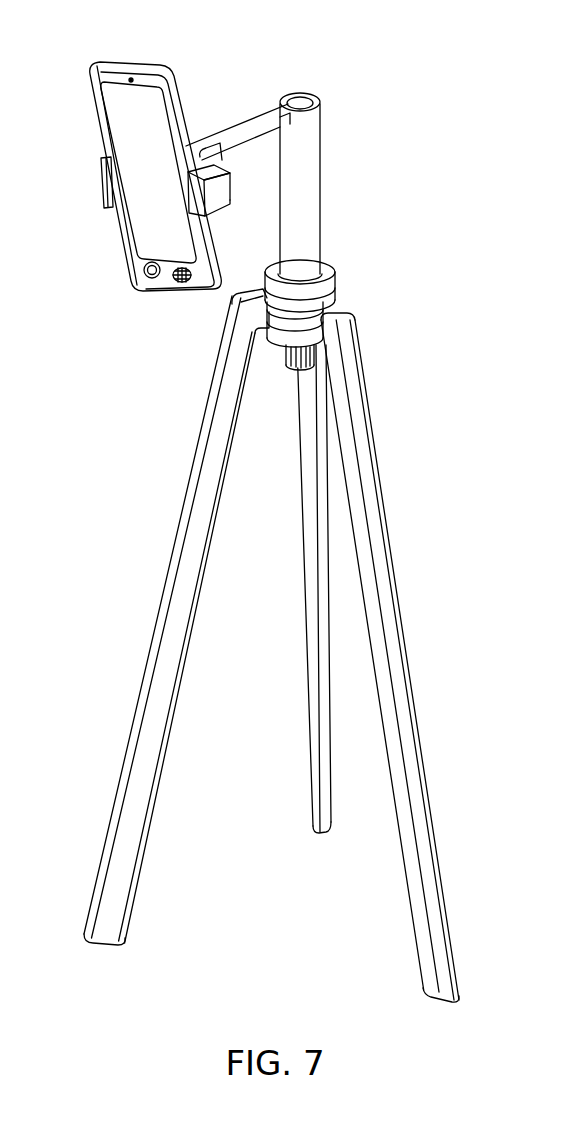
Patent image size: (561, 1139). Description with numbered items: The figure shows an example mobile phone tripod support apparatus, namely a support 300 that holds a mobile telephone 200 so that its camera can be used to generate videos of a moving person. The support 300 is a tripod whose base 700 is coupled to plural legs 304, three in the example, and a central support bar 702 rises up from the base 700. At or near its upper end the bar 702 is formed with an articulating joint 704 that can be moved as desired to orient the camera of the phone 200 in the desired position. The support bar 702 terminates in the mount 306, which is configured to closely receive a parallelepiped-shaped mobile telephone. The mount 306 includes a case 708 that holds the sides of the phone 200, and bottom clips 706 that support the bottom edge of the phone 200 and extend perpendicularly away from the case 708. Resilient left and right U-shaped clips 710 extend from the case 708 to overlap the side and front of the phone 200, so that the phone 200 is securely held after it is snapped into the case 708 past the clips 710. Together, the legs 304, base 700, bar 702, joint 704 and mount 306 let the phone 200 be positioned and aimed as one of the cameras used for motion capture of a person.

The mobile telephone 200 is at (136, 62).
The mount 300 is at (298, 557).
The legs 304 is at (397, 617).
The mount 306 is at (226, 90).
The base 700 is at (340, 277).
The central support bar 702 is at (320, 140).
The articulating joint 704 is at (313, 98).
The bottom clips 706 is at (104, 185).
The case 708 is at (224, 162).
The U-shaped clips 710 is at (224, 203).